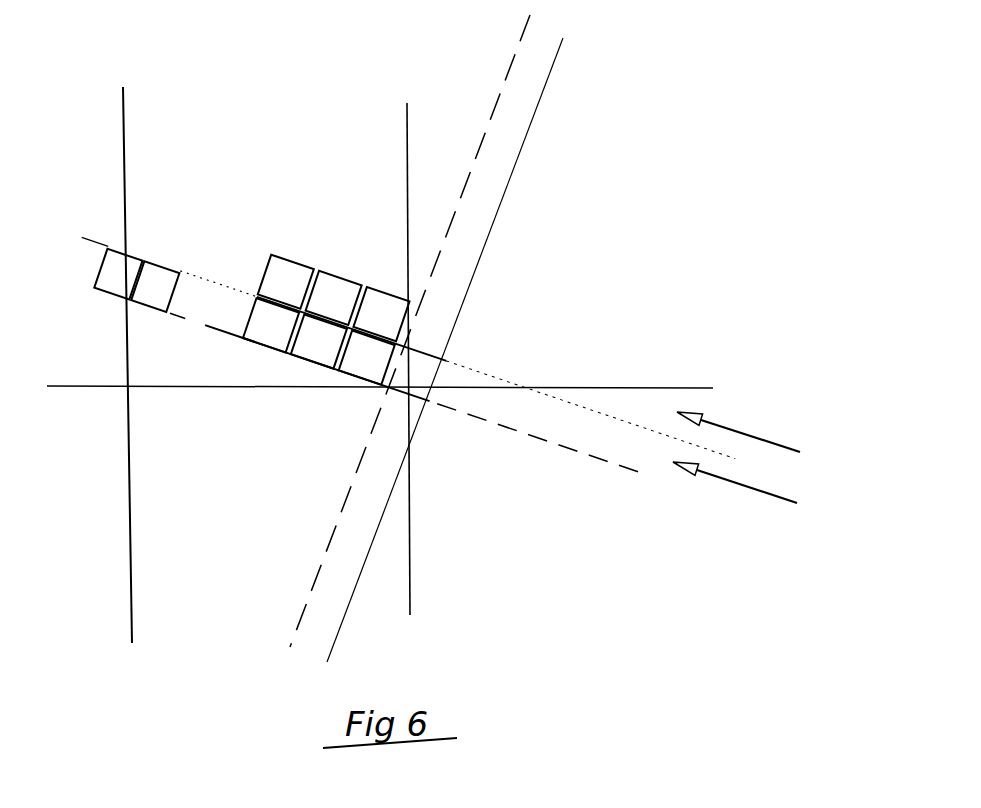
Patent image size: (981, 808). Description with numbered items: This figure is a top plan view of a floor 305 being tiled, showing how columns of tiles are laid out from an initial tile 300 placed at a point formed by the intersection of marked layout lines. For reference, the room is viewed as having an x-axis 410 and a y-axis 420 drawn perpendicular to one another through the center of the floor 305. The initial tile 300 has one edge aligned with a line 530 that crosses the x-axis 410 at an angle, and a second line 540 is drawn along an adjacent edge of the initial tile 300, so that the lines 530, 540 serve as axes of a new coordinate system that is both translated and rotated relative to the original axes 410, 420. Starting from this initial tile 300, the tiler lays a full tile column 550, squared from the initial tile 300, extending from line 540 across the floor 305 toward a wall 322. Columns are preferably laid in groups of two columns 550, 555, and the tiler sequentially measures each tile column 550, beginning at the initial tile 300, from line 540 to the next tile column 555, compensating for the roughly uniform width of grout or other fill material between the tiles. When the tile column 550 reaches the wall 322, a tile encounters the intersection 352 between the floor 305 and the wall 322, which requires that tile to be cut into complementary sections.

The initial tile 300 is at (428, 370).
The floor 305 is at (633, 205).
The wall 322 is at (86, 174).
The intersection 352 is at (128, 496).
The x-axis 410 is at (657, 387).
The y-axis 420 is at (407, 127).
The line 530 is at (595, 453).
The line 540 is at (332, 542).
The full tile column 550 is at (753, 496).
The tile column 555 is at (465, 359).